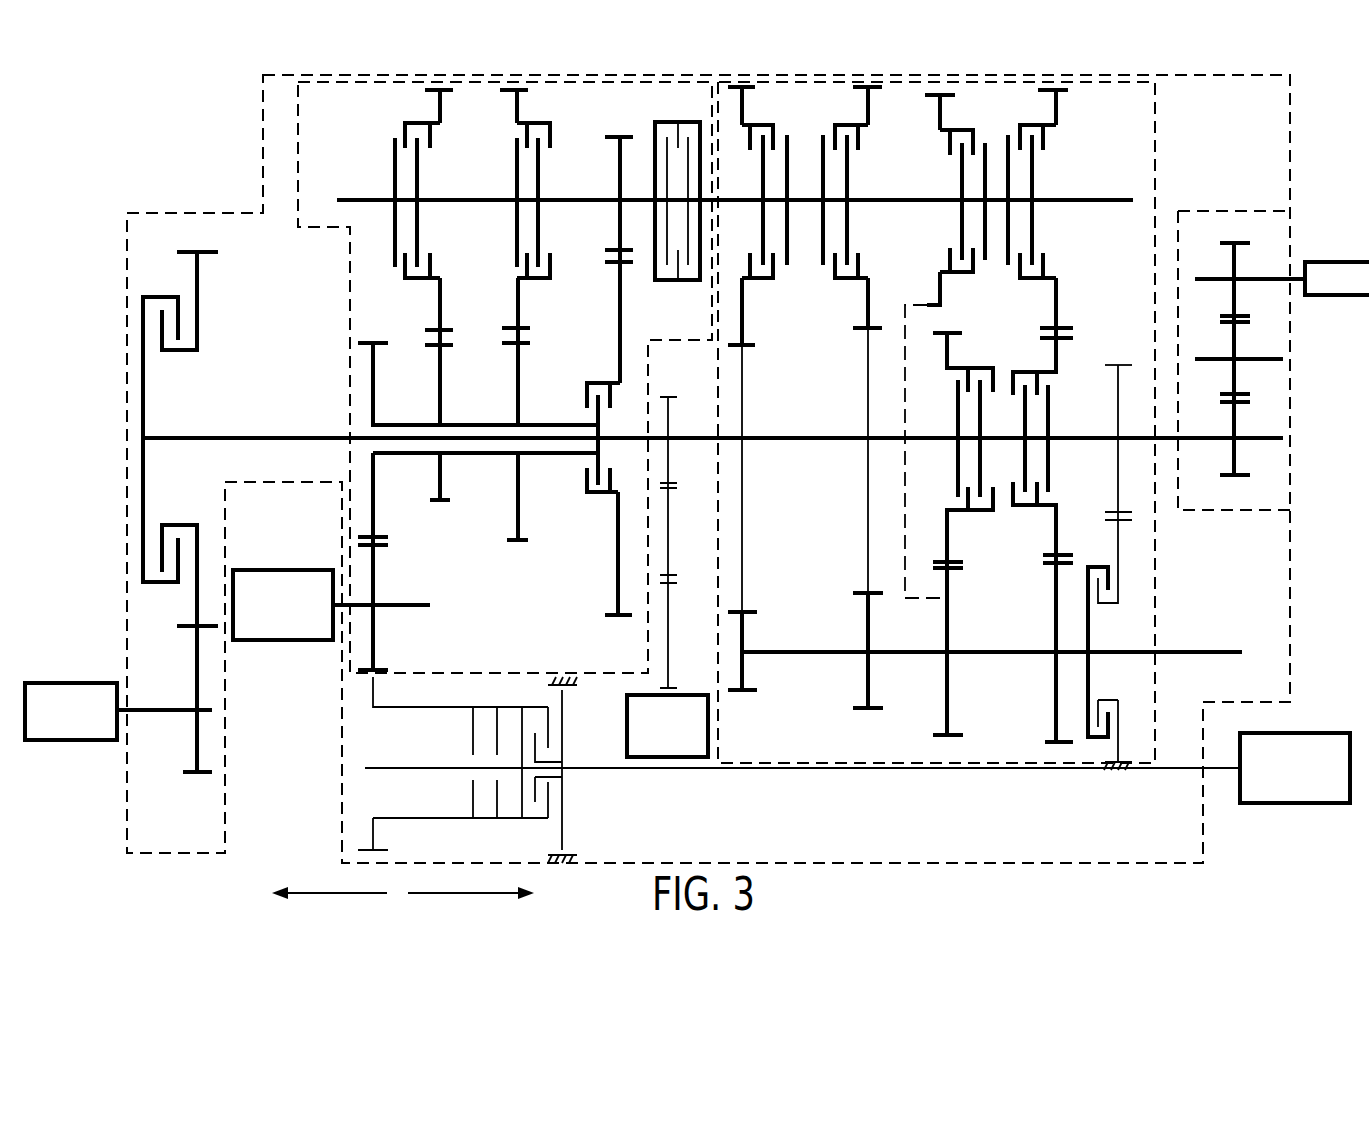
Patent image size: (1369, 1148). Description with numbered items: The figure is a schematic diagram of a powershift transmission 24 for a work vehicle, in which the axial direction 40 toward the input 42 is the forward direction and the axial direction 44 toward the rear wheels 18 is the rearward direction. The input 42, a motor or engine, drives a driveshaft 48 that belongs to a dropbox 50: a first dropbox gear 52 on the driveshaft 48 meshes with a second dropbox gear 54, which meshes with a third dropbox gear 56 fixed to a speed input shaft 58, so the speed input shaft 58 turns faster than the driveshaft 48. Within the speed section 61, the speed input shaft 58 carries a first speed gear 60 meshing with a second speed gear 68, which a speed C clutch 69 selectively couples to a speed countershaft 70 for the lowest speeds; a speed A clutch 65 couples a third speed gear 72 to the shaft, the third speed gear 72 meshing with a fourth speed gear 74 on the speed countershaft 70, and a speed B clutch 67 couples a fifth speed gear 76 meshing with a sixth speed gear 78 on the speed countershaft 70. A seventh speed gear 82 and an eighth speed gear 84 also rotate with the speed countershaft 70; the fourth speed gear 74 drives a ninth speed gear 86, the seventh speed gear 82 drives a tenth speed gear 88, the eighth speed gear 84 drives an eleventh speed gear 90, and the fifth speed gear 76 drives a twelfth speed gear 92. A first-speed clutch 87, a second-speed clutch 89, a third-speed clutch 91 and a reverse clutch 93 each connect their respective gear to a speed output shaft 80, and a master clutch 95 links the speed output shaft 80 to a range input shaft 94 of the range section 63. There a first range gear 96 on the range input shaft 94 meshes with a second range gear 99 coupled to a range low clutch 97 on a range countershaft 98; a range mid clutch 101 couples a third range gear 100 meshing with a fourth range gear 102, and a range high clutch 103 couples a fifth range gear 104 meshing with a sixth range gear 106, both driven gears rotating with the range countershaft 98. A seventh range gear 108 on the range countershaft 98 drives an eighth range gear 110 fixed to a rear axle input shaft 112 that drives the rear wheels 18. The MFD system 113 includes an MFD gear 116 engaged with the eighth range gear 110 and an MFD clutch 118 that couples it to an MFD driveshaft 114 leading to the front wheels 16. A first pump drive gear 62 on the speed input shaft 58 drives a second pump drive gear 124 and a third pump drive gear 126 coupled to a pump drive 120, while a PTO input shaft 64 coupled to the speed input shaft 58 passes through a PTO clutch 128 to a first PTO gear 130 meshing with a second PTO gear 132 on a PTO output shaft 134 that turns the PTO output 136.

The front wheels 16 is at (1322, 803).
The rear wheels 18 is at (283, 640).
The transmission 24 is at (1320, 147).
The axial direction 40 is at (470, 897).
The input 42 is at (1360, 298).
The axial direction 44 is at (325, 900).
The driveshaft 48 is at (1245, 279).
The dropbox 50 is at (1195, 211).
The first dropbox gear 52 is at (1232, 276).
The second dropbox gear 54 is at (1234, 365).
The third dropbox gear 56 is at (1234, 445).
The speed input shaft 58 is at (1115, 437).
The first speed gear 60 is at (1120, 393).
The speed section 61 is at (1154, 105).
The first pump drive gear 62 is at (668, 420).
The range section 63 is at (350, 280).
The PTO input shaft 64 is at (283, 437).
The speed A clutch 65 is at (958, 415).
The speed B clutch 67 is at (1048, 420).
The second speed gear 68 is at (1120, 532).
The speed C clutch 69 is at (1090, 678).
The speed countershaft 70 is at (1098, 650).
The third speed gear 72 is at (947, 525).
The fourth speed gear 74 is at (948, 680).
The fifth speed gear 76 is at (1058, 525).
The sixth speed gear 78 is at (1058, 680).
The speed output shaft 80 is at (1075, 200).
The seventh speed gear 82 is at (868, 665).
The eighth speed gear 84 is at (742, 660).
The ninth speed gear 86 is at (942, 290).
The speed 1 clutch 87 is at (773, 130).
The tenth speed gear 88 is at (868, 283).
The speed 2 clutch 89 is at (858, 138).
The eleventh speed gear 90 is at (742, 292).
The speed 3 clutch 91 is at (950, 140).
The twelfth speed gear 92 is at (1056, 322).
The reverse clutch 93 is at (1043, 135).
The range input shaft 94 is at (365, 200).
The master clutch 95 is at (655, 135).
The first range gear 96 is at (620, 190).
The range low clutch 97 is at (587, 385).
The range countershaft 98 is at (522, 420).
The second range gear 99 is at (618, 530).
The third range gear 100 is at (517, 125).
The range mid clutch 101 is at (550, 135).
The fourth range gear 102 is at (518, 473).
The range high clutch 103 is at (405, 128).
The fifth range gear 104 is at (442, 104).
The sixth range gear 106 is at (440, 465).
The seventh range gear 108 is at (375, 400).
The eighth range gear 110 is at (375, 583).
The rear axle input shaft 112 is at (430, 600).
The mechanical front-wheel drive (MFD) system 113 is at (920, 834).
The MFD driveshaft 114 is at (855, 768).
The MFD gear 116 is at (378, 700).
The MFD clutch 118 is at (562, 693).
The pump drive 120 is at (710, 722).
The second pump drive gear 124 is at (668, 505).
The third pump drive gear 126 is at (668, 622).
The PTO clutch 128 is at (143, 360).
The first PTO gear 130 is at (197, 252).
The second PTO gear 132 is at (205, 775).
The PTO output shaft 134 is at (140, 710).
The PTO output 136 is at (100, 742).